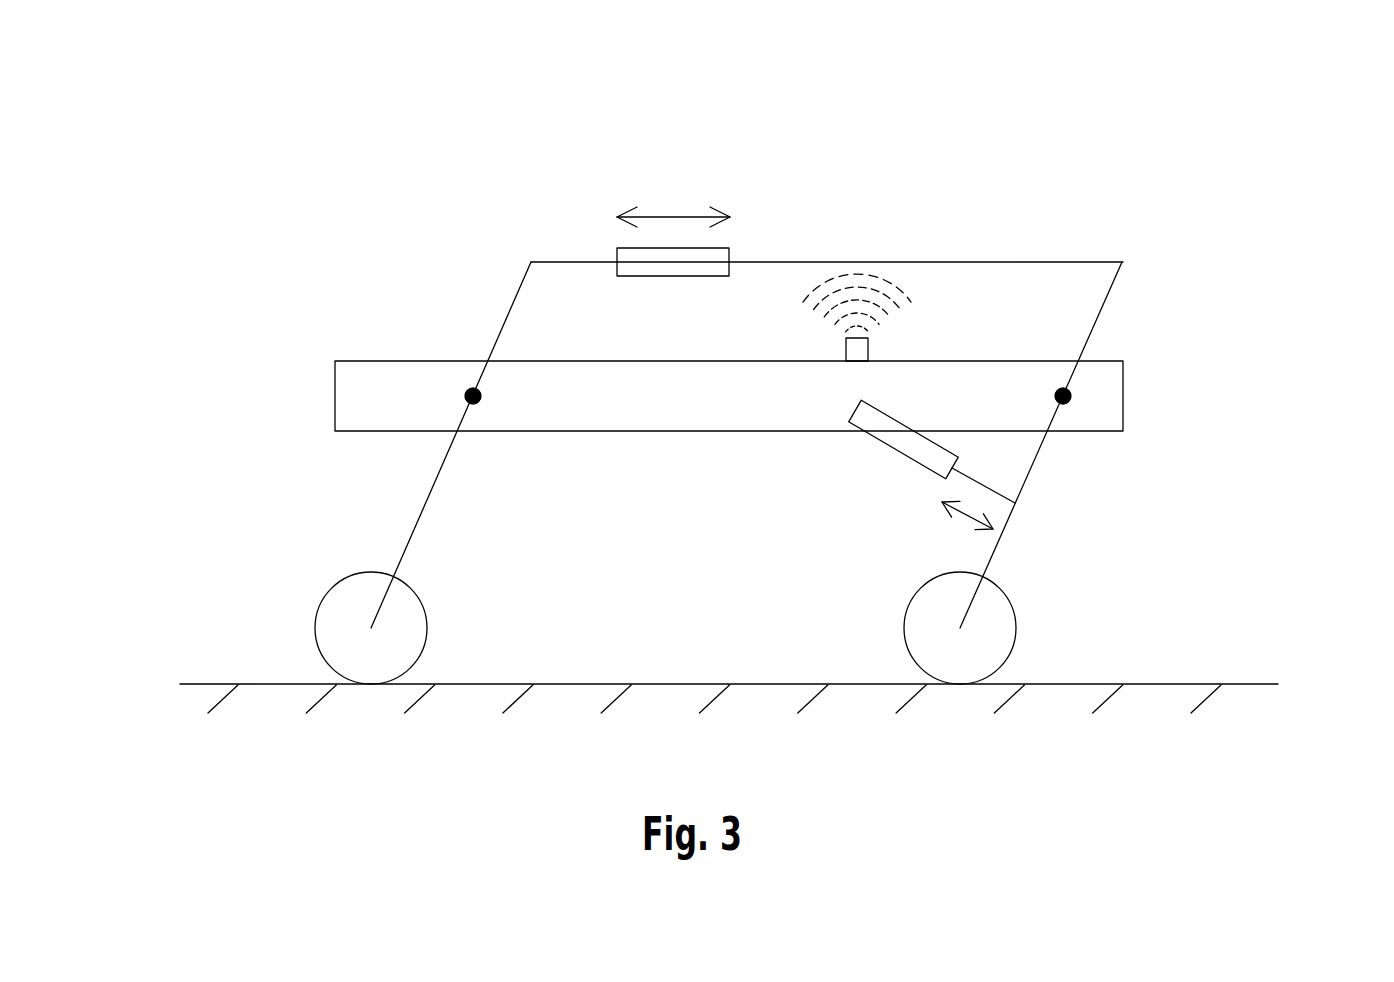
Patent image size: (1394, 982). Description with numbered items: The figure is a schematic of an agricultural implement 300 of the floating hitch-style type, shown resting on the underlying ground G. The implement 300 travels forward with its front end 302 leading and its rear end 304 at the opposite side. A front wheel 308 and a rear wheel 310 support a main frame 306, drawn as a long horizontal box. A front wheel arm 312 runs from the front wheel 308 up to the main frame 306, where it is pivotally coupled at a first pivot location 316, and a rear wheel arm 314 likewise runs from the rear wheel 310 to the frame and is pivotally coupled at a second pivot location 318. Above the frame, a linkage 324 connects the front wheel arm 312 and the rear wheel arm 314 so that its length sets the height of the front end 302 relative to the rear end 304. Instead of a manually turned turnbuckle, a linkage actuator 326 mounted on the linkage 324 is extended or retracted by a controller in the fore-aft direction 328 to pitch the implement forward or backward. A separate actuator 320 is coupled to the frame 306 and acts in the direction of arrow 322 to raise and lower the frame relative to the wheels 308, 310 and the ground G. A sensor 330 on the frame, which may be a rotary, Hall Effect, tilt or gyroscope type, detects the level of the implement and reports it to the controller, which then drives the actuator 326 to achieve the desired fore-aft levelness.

The agricultural implement 300 is at (460, 145).
The front end 302 is at (192, 413).
The rear end 304 is at (1274, 426).
The main frame 306 is at (383, 377).
The front wheel 308 is at (330, 627).
The rear wheel 310 is at (918, 625).
The front wheel arm 312 is at (412, 536).
The rear wheel arm 314 is at (1000, 538).
The first pivot location 316 is at (483, 396).
The second pivot location 318 is at (1073, 397).
The actuator 320 is at (893, 452).
The arrow 322 is at (972, 517).
The linkage 324 is at (960, 262).
The actuator 326 is at (670, 267).
The fore-aft direction 328 is at (673, 216).
The sensor 330 is at (882, 344).
The ground G is at (1193, 683).